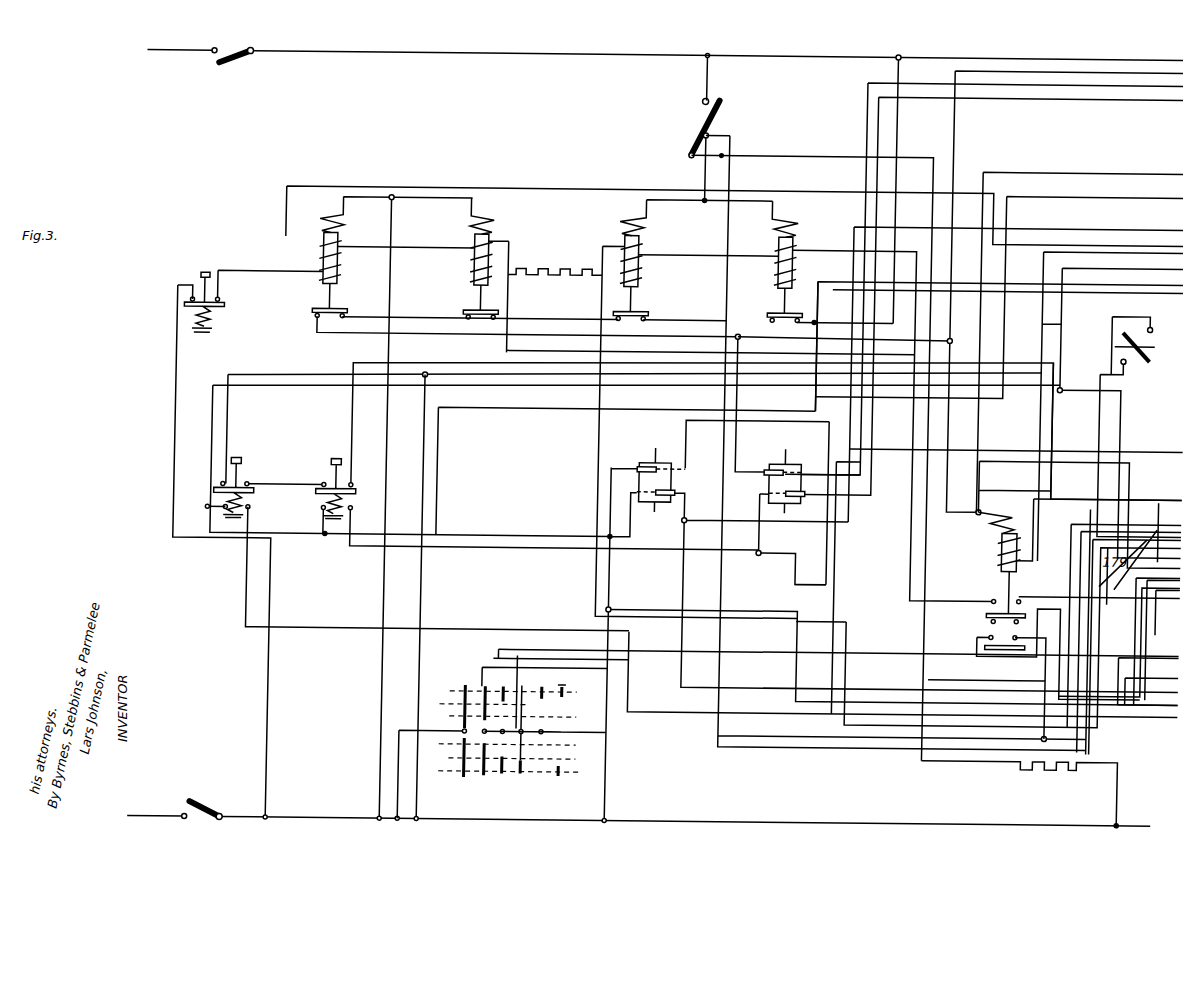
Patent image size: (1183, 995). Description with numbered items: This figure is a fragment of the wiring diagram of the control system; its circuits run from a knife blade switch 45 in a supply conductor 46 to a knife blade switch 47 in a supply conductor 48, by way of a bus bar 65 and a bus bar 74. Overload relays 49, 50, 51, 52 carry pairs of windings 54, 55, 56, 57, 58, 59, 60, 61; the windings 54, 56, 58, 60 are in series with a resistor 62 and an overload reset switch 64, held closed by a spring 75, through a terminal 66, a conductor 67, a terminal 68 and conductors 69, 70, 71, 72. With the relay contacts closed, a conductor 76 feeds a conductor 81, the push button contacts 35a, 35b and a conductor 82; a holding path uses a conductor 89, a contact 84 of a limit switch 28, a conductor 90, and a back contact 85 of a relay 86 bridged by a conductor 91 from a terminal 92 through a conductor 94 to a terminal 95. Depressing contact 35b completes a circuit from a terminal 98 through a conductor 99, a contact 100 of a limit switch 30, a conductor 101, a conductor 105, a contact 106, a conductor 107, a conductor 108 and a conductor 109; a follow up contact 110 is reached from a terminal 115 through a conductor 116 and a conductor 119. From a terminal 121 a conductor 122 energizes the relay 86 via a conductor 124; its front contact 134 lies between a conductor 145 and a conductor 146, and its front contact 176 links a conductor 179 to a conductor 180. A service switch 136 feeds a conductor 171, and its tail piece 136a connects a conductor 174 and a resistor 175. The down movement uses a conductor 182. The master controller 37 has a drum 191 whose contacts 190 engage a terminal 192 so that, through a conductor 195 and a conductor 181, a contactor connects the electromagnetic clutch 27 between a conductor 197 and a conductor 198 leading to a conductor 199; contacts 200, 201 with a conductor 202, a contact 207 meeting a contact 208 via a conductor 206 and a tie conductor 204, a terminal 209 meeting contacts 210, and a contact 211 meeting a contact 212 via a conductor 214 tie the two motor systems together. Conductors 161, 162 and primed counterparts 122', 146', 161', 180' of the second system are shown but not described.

The electromagnetic clutch 27 is at (1130, 345).
The limit switch 28 is at (644, 468).
The limit switch 30 is at (776, 464).
The push button contact 35a is at (244, 470).
The push button contact 35b is at (330, 478).
The master controller 37 is at (508, 732).
The knife blade switch 45 is at (226, 64).
The supply conductor 46 is at (178, 57).
The knife blade switch 47 is at (210, 806).
The supply conductor 48 is at (160, 821).
The overload relay 49 is at (777, 262).
The overload relay 50 is at (692, 259).
The overload relay 51 is at (483, 258).
The overload relay 52 is at (392, 257).
The winding 54 is at (790, 258).
The winding 55 is at (788, 225).
The winding 56 is at (636, 258).
The winding 57 is at (634, 225).
The winding 58 is at (487, 258).
The winding 59 is at (484, 225).
The winding 60 is at (336, 270).
The winding 61 is at (332, 225).
The resistor 62 is at (538, 264).
The overload reset switch 64 is at (211, 264).
The bus bar 65 is at (537, 57).
The terminal 66 is at (895, 53).
The conductor 67 is at (895, 130).
The terminal 68 is at (800, 324).
The conductor 69 is at (708, 242).
The conductor 70 is at (405, 250).
The conductor 71 is at (282, 279).
The conductor 72 is at (174, 390).
The bus bar 74 is at (318, 818).
The spring 75 is at (212, 325).
The conductor 76 is at (430, 336).
The conductor 81 is at (1096, 172).
The conductor 82 is at (424, 586).
The contact 84 is at (676, 492).
The back contact 85 is at (992, 628).
The relay 86 is at (1002, 532).
The conductor 89 is at (846, 430).
The conductor 90 is at (606, 588).
The conductor 91 is at (752, 612).
The terminal 92 is at (616, 608).
The conductor 94 is at (686, 594).
The terminal 95 is at (690, 524).
The terminal 98 is at (730, 338).
The conductor 99 is at (738, 407).
The contact 100 is at (782, 468).
The conductor 101 is at (860, 470).
The conductor 105 is at (896, 413).
The contact 106 is at (790, 500).
The conductor 107 is at (773, 558).
The conductor 108 is at (678, 397).
The conductor 109 is at (1110, 272).
The follow up contact 110 is at (660, 470).
The terminal 115 is at (206, 510).
The conductor 116 is at (434, 464).
The conductor 119 is at (1114, 290).
The terminal 121 is at (950, 338).
The conductor 122 is at (636, 408).
The conductor 122' is at (1079, 512).
The conductor 124 is at (1062, 322).
The front contact 134 is at (992, 588).
The service switch 136 is at (727, 117).
The tail piece 136a is at (688, 142).
The conductor 145 is at (1060, 593).
The conductor 146 is at (767, 513).
The conductor 146' is at (1009, 667).
The conductor 161 is at (734, 209).
The conductor 161' is at (857, 518).
The conductor 162 is at (386, 582).
The conductor 171 is at (1102, 748).
The conductor 174 is at (920, 659).
The resistor 175 is at (1050, 768).
The front contact 176 is at (980, 636).
The conductor 179 is at (1095, 620).
The conductor 180 is at (917, 708).
The conductor 180' is at (1152, 691).
The conductor 181 is at (420, 731).
The conductor 182 is at (1106, 696).
The contacts 190 is at (464, 778).
The drum 191 is at (472, 686).
The terminal 192 is at (468, 752).
The conductor 195 is at (850, 658).
The conductor 197 is at (1118, 594).
The conductor 198 is at (1096, 408).
The conductor 199 is at (1122, 394).
The contact 200 is at (496, 795).
The contact 201 is at (507, 754).
The conductor 202 is at (498, 660).
The conductor 204 is at (1124, 702).
The conductor 206 is at (1148, 440).
The contact 207 is at (522, 662).
The contact 208 is at (526, 772).
The terminal 209 is at (564, 733).
The contacts 210 is at (576, 780).
The contact 211 is at (546, 678).
The contact 212 is at (566, 737).
The conductor 214 is at (1056, 534).